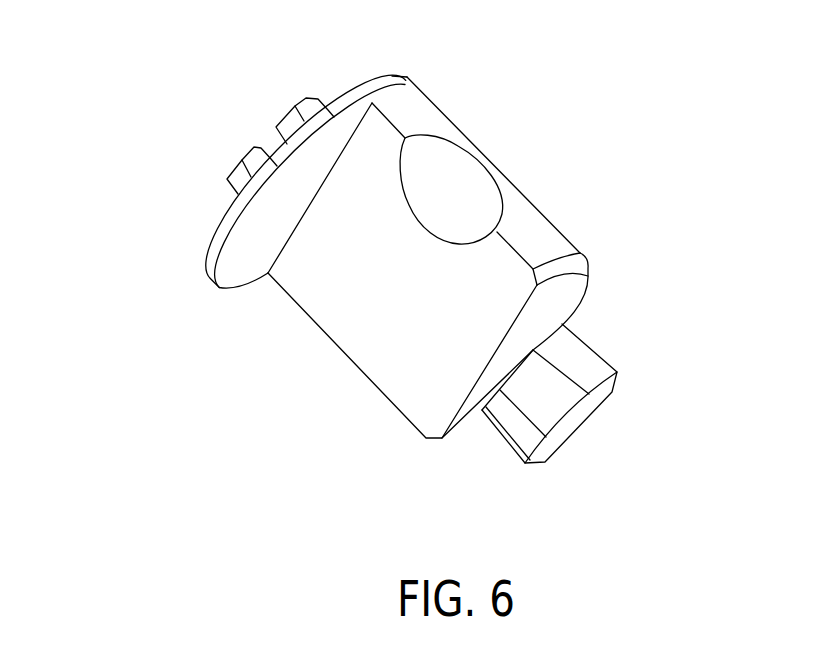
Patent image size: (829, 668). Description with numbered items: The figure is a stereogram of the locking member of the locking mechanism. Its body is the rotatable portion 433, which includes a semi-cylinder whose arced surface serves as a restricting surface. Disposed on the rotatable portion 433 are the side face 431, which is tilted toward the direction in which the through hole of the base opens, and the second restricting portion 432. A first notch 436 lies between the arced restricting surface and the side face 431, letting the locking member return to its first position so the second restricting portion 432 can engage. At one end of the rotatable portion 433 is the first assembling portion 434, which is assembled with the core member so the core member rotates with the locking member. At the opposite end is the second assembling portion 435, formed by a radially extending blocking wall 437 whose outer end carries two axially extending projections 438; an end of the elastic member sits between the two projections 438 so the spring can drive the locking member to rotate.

The side face 431 is at (492, 265).
The second restricting portion 432 is at (525, 217).
The rotatable portion 433 is at (312, 428).
The first assembling portion 434 is at (553, 403).
The second assembling portion 435 is at (292, 66).
The first notch 436 is at (457, 175).
The blocking wall 437 is at (232, 223).
The projections 438 is at (237, 177).